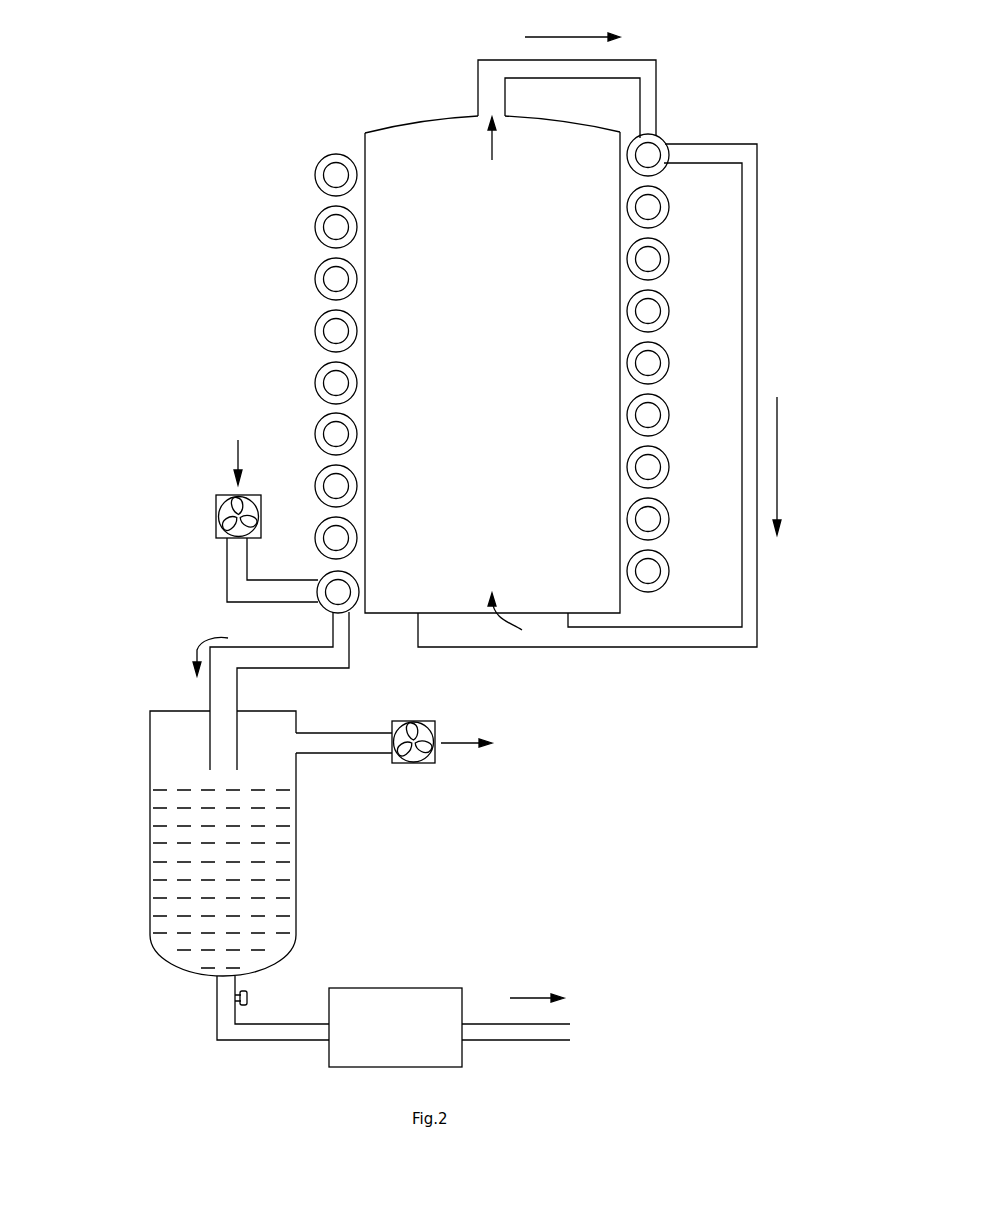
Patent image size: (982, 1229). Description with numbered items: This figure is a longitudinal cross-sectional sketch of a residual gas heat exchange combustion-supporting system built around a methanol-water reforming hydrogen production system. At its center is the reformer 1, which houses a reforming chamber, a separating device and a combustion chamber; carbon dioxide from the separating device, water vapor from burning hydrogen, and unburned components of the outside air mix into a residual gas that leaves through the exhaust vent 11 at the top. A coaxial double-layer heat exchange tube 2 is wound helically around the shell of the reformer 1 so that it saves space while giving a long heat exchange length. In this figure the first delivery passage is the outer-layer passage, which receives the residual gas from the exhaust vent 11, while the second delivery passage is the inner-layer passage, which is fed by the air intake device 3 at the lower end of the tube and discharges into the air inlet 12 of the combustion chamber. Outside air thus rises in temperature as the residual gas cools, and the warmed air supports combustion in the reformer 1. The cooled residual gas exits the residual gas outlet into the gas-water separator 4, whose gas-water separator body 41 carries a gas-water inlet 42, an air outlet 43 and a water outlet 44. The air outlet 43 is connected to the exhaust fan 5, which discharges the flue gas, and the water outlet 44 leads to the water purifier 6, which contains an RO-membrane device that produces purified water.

The reformer 1 is at (400, 132).
The exhaust vent 11 is at (485, 70).
The air inlet 12 is at (550, 635).
The heat exchange tube 2 is at (320, 280).
The air intake device 3 is at (218, 534).
The gas-water separator 4 is at (158, 760).
The gas-water separator body 41 is at (150, 865).
The gas-water inlet 42 is at (210, 717).
The air outlet 43 is at (338, 752).
The exhaust fan 5 is at (437, 765).
The water outlet 44 is at (218, 990).
The water purifier 6 is at (398, 993).